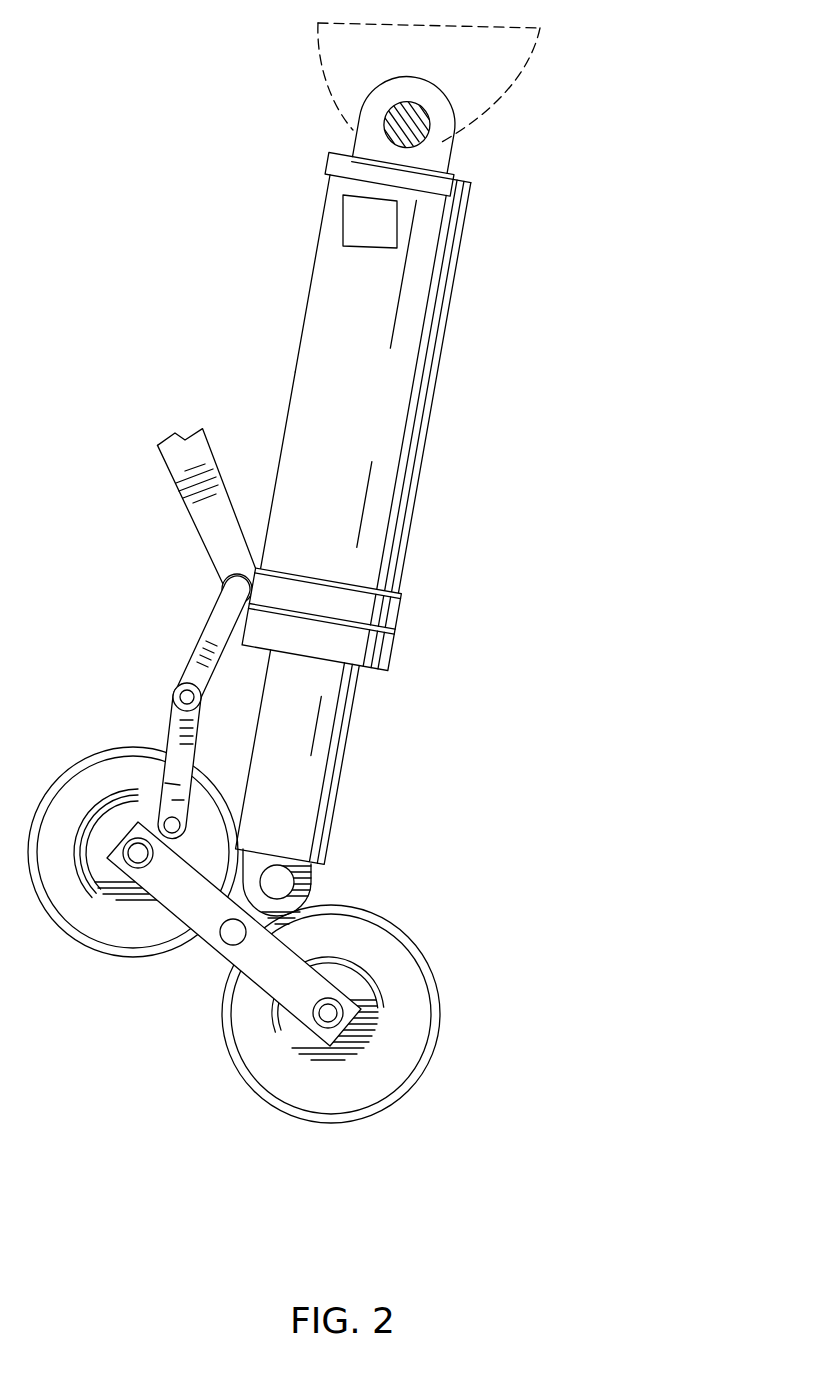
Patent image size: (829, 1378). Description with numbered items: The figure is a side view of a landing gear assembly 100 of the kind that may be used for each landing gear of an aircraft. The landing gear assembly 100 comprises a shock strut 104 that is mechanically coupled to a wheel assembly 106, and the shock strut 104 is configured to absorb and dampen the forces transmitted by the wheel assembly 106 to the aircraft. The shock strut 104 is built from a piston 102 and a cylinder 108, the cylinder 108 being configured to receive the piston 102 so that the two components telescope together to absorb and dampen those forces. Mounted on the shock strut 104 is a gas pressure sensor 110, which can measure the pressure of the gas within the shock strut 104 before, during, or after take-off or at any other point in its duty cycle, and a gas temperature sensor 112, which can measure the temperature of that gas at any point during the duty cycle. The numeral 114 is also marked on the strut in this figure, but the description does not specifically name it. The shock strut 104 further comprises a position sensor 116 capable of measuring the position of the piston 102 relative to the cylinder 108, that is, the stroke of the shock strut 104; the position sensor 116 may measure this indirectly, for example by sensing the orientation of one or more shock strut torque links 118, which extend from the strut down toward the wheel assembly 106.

The landing gear assembly 100 is at (603, 178).
The piston 102 is at (335, 802).
The shock strut 104 is at (452, 292).
The wheel assembly 106 is at (427, 960).
The cylinder 108 is at (385, 477).
The gas pressure sensor 110 is at (357, 217).
The gas temperature sensor 112 is at (340, 270).
The lower portion of housing 114 is at (320, 345).
The position sensor 116 is at (228, 588).
The shock strut torque links 118 is at (177, 690).